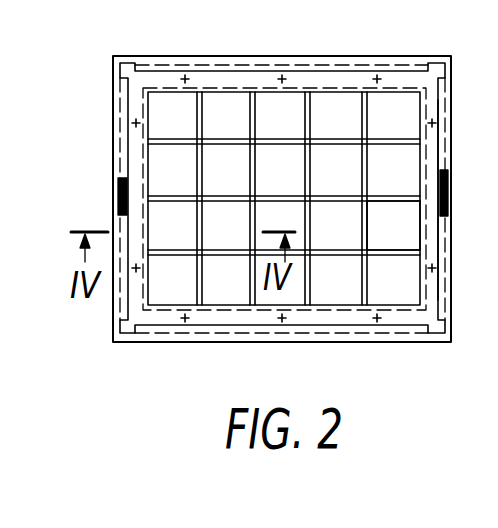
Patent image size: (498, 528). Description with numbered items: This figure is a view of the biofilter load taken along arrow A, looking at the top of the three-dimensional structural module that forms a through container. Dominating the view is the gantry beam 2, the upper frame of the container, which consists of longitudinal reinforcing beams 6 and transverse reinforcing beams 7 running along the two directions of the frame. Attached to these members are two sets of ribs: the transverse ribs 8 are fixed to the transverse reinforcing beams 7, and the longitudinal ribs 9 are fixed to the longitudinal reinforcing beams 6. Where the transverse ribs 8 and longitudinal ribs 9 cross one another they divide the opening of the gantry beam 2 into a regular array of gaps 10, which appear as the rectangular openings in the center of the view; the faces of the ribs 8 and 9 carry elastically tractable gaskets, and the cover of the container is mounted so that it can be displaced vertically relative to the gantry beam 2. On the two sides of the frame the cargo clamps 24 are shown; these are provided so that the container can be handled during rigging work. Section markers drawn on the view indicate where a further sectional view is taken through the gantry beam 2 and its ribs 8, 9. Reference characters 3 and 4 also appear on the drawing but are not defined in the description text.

The gantry beam 2 is at (491, 27).
The outer housing frame 3 is at (170, 57).
The inner frame 4 is at (120, 98).
The longitudinal reinforcing beams 6 is at (338, 310).
The transverse reinforcing beams 7 is at (432, 288).
The transverse ribs 8 is at (178, 253).
The longitudinal ribs 9 is at (250, 285).
The gaps 10 is at (405, 222).
The cargo clamps 24 is at (118, 187).